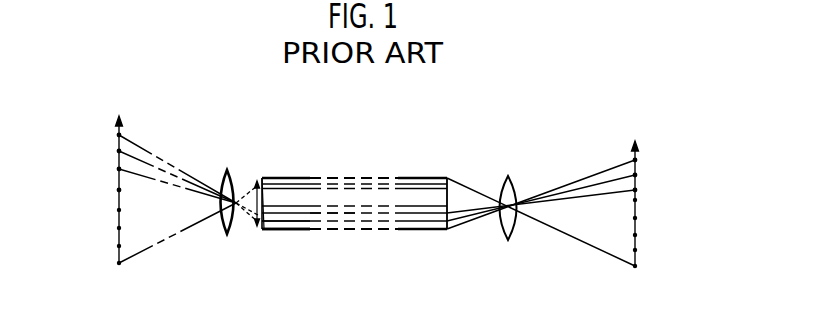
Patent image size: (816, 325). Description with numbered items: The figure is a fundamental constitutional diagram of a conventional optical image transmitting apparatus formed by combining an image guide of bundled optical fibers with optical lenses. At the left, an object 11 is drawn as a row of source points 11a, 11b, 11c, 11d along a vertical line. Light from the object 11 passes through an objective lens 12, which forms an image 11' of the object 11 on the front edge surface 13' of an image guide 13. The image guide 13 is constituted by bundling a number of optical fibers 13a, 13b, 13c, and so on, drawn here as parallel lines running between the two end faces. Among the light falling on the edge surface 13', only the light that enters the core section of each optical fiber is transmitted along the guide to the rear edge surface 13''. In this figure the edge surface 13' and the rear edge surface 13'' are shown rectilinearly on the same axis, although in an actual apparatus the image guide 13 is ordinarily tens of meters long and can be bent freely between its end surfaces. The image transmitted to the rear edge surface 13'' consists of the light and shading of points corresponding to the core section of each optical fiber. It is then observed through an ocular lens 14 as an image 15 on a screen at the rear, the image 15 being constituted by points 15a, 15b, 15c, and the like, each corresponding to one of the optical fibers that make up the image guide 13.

The object 11 is at (176, 179).
The light emitting point 11a is at (117, 135).
The light emitting point 11b is at (117, 151).
The light emitting point 11c is at (117, 169).
The light emitting point 11d is at (117, 190).
The image of the object 11' is at (259, 172).
The objective lens 12 is at (228, 170).
The image guide 13 is at (354, 172).
The edge surface 13' is at (285, 169).
The rear edge surface 13'' is at (442, 174).
The optical fiber 13a is at (283, 231).
The optical fiber 13b is at (302, 230).
The optical fiber 13c is at (331, 220).
The ocular lens 14 is at (508, 176).
The image 15 is at (639, 144).
The point 15a is at (638, 160).
The point 15b is at (638, 175).
The point 15c is at (638, 190).